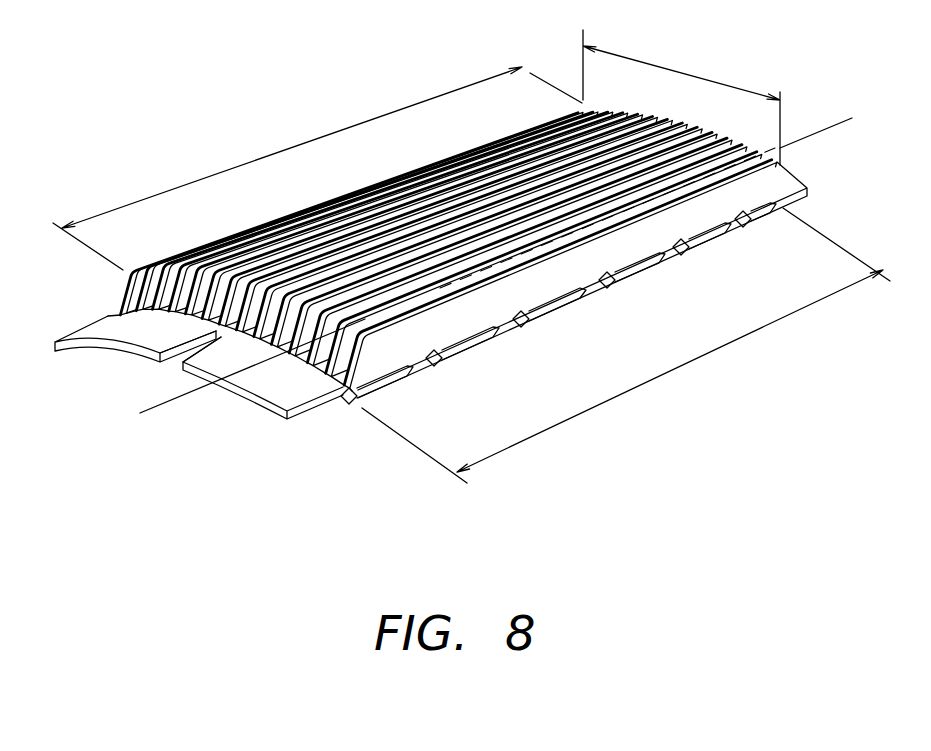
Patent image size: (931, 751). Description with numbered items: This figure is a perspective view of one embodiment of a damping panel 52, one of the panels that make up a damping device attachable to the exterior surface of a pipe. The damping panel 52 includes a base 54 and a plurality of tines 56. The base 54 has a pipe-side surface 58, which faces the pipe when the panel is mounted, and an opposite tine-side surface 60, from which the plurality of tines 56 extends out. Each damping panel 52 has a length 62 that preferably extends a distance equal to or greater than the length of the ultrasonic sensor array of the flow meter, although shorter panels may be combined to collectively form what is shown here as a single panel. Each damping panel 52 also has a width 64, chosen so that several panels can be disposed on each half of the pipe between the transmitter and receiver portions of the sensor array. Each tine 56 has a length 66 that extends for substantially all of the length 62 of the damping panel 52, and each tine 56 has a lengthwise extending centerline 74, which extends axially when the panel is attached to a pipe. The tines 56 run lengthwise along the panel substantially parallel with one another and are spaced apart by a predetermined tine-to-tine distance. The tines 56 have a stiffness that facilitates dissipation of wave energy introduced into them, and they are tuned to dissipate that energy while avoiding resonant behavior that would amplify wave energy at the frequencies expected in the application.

The damping panel 52 is at (225, 401).
The base 54 is at (120, 315).
The tines 56 is at (246, 258).
The pipe-side surface 58 is at (112, 354).
The tine-side surface 60 is at (304, 385).
The length 62 is at (697, 362).
The width 64 is at (713, 82).
The length 66 is at (317, 138).
The lengthwise extending centerline 74 is at (815, 130).